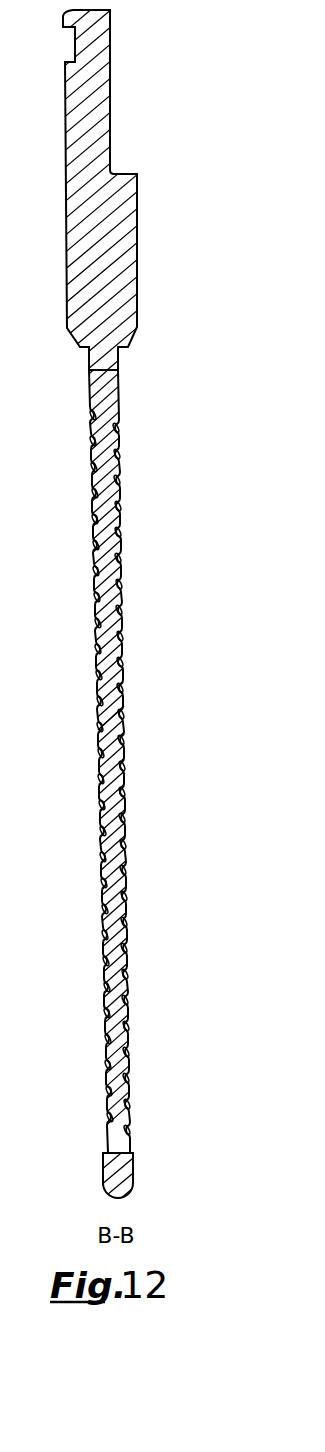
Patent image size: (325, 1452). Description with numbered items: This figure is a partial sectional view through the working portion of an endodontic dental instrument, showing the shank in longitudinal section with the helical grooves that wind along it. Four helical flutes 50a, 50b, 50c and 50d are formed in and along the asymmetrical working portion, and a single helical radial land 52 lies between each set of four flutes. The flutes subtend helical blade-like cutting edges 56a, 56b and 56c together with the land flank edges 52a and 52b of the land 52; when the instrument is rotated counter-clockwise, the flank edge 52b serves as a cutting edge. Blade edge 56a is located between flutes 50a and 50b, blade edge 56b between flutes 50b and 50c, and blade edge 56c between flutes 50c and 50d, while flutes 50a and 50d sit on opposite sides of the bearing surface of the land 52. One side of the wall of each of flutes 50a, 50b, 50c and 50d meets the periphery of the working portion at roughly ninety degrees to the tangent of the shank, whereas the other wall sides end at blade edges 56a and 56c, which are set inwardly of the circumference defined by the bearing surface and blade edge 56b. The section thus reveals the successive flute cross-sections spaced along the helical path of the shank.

The helical radial land 52 is at (127, 676).
The land flank edge 52a is at (125, 662).
The land flank edge 52b is at (125, 688).
The helical flute 50a is at (108, 755).
The helical flute 50b is at (117, 742).
The helical flute 50c is at (122, 723).
The helical flute 50d is at (122, 700).
The helical blade-like cutting edge 56a is at (122, 750).
The helical blade-like cutting edge 56b is at (123, 733).
The helical blade-like cutting edge 56c is at (108, 702).